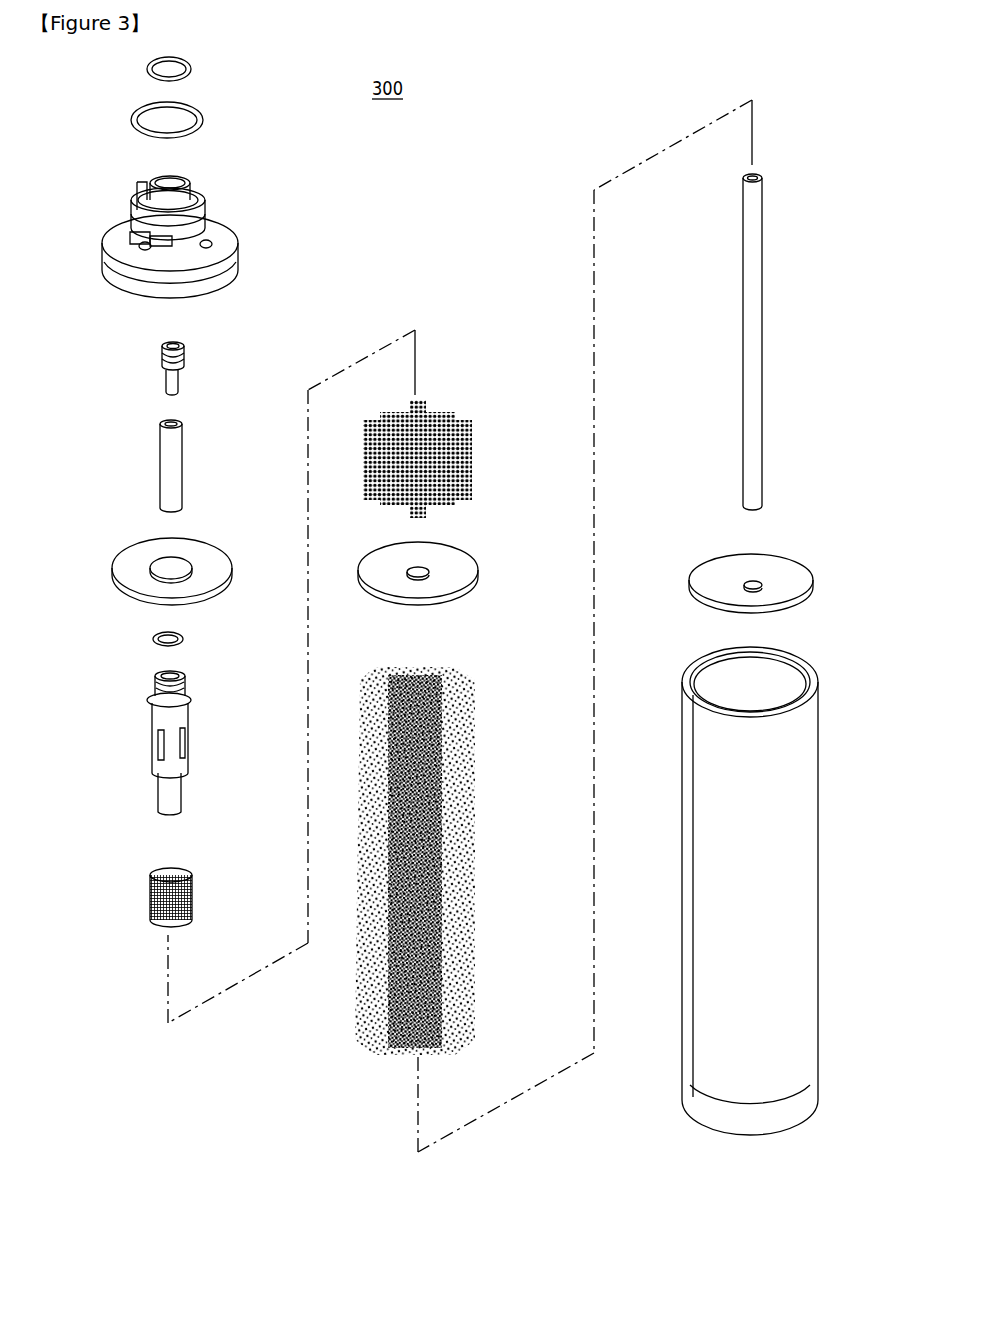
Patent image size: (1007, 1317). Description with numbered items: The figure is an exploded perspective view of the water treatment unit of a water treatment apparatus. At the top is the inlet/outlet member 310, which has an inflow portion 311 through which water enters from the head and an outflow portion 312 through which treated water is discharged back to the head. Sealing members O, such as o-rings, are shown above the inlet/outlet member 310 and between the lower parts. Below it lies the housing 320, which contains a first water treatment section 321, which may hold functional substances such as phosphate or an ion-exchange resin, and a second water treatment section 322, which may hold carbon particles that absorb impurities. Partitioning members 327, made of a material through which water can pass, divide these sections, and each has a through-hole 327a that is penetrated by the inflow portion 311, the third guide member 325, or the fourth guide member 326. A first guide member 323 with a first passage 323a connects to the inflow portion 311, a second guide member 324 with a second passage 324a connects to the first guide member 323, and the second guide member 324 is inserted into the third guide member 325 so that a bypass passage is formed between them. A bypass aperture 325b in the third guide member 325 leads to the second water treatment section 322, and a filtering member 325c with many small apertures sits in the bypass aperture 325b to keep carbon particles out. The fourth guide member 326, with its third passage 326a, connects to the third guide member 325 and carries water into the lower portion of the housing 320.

The sealing member O is at (193, 73).
The inlet/outlet member 310 is at (208, 222).
The inflow portion 311 is at (173, 178).
The outflow portion 312 is at (203, 202).
The housing 320 is at (672, 820).
The first water treatment section 321 is at (445, 850).
The second water treatment section 322 is at (470, 457).
The first guide member 323 is at (242, 346).
The first passage 323a is at (173, 343).
The second guide member 324 is at (107, 453).
The second passage 324a is at (165, 425).
The third guide member 325 is at (111, 743).
The bypass aperture 325b is at (160, 757).
The filtering member 325c is at (152, 887).
The fourth guide member 326 is at (720, 309).
The third passage 326a is at (757, 172).
The partitioning member 327 is at (422, 550).
The through-hole 327a is at (173, 560).